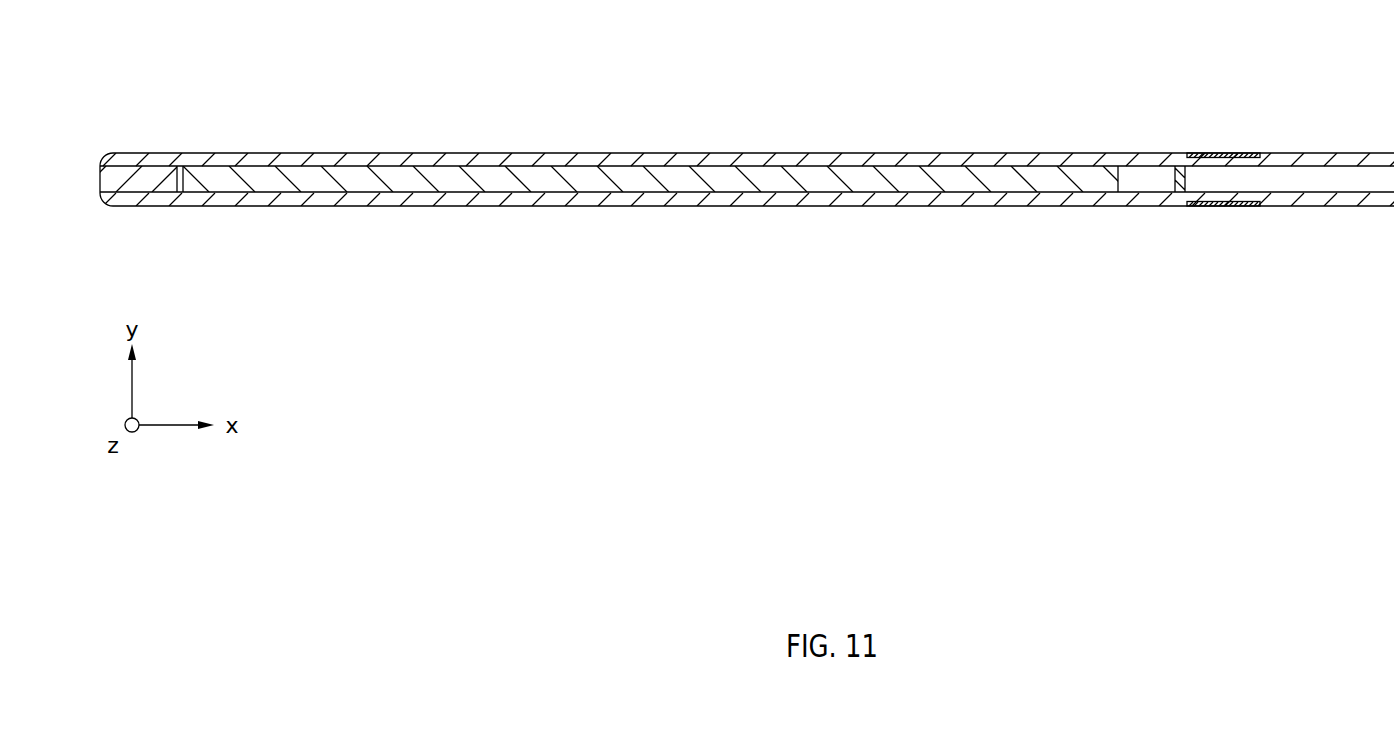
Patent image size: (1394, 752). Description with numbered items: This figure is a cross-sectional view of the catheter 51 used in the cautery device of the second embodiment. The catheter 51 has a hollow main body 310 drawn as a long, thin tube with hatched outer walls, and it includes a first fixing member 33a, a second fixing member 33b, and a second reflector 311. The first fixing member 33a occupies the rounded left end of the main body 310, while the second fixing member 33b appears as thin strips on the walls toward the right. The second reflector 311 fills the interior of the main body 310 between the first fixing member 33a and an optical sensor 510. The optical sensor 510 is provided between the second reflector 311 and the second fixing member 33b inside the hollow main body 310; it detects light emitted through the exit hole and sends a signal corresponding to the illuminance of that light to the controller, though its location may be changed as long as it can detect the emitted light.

The catheter 51 is at (633, 76).
The main body 310 is at (900, 198).
The second reflector 311 is at (509, 176).
The first fixing member 33a is at (141, 178).
The second fixing member 33b is at (1220, 153).
The optical sensor 510 is at (1146, 176).